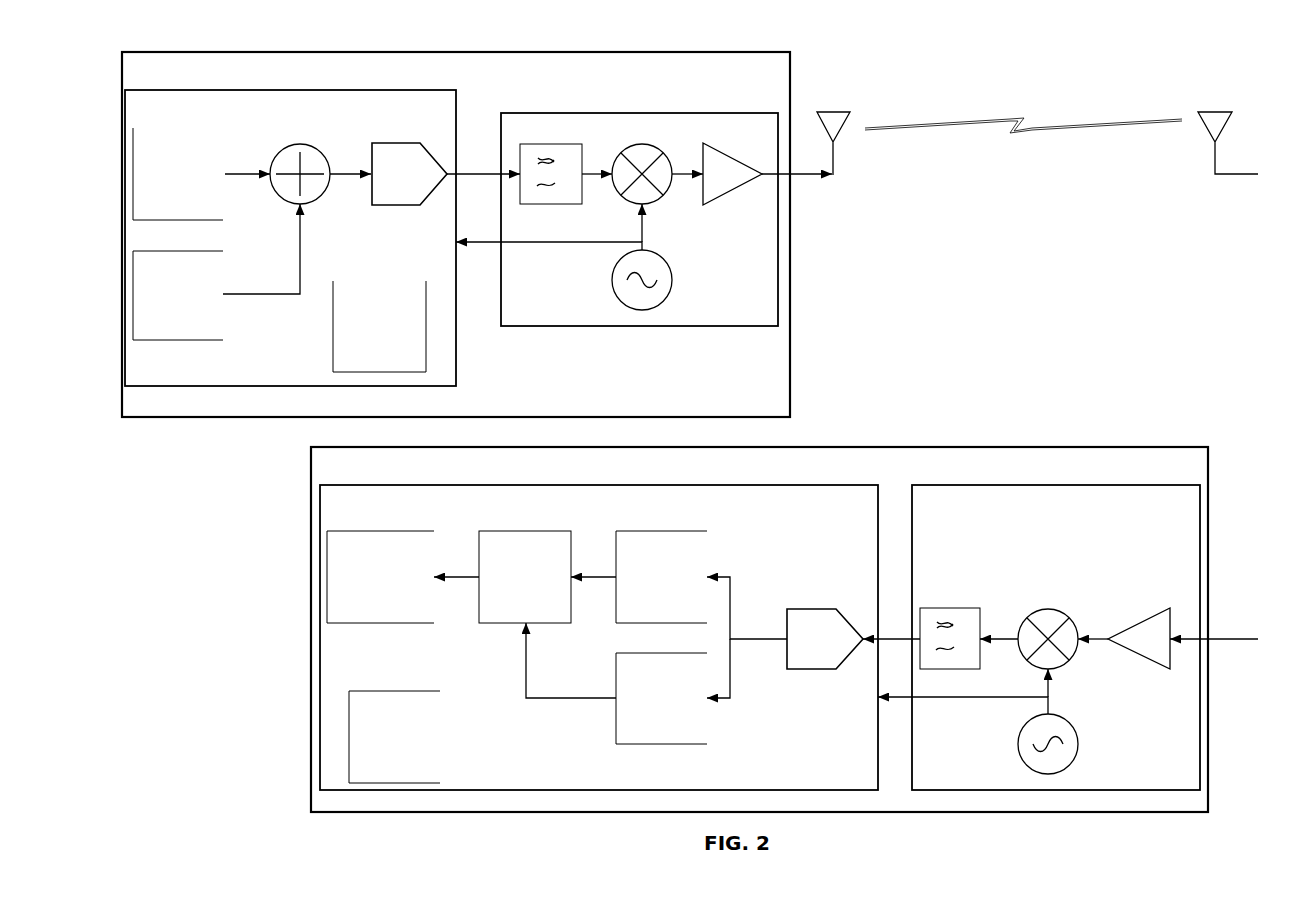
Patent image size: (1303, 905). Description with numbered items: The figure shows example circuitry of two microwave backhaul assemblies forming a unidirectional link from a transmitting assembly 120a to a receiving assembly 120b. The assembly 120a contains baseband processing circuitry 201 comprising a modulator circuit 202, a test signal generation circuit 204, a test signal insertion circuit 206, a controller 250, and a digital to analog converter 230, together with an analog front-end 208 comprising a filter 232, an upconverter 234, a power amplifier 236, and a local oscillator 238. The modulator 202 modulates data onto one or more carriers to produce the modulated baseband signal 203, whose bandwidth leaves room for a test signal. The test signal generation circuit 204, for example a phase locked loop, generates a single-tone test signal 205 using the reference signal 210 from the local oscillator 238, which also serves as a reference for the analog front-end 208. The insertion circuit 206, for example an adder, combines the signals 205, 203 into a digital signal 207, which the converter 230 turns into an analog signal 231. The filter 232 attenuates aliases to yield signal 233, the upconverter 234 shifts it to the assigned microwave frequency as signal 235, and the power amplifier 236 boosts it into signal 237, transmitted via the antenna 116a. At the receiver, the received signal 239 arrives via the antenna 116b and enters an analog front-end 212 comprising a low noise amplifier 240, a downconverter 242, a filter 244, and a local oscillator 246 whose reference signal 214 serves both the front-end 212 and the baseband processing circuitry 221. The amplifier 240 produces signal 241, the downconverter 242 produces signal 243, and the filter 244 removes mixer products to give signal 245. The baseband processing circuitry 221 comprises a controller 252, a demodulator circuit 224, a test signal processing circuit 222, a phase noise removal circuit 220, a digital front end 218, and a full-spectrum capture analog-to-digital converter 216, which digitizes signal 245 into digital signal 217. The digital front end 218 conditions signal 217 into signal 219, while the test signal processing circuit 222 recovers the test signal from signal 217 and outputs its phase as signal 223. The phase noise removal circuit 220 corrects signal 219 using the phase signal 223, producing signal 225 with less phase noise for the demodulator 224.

The assembly 120a is at (426, 52).
The baseband processing circuitry 201 is at (222, 90).
The modulator circuit 202 is at (177, 127).
The modulated baseband signal 203 is at (253, 176).
The test signal generation circuit 204 is at (178, 342).
The test signal 205 is at (254, 297).
The test signal insertion circuit 206 is at (298, 144).
The combined digital signal 207 is at (352, 172).
The analog front-end 208 is at (534, 113).
The reference signal 210 is at (546, 242).
The digital to analog converter 230 is at (400, 143).
The analog signal 231 is at (479, 172).
The filter 232 is at (550, 142).
The filtered signal 233 is at (601, 172).
The upconverter 234 is at (640, 143).
The upconverted signal 235 is at (691, 172).
The power amplifier 236 is at (732, 155).
The amplified signal 237 is at (806, 172).
The local oscillator 238 is at (612, 286).
The controller 250 is at (363, 280).
The antenna 116a is at (845, 112).
The antenna 116b is at (1227, 112).
The assembly 120b is at (874, 447).
The analog front-end 212 is at (971, 485).
The reference signal 214 is at (1001, 697).
The full-spectrum capture analog-to-digital converter circuit 216 is at (816, 608).
The digital signal 217 is at (768, 637).
The digital front end 218 is at (660, 531).
The conditioned signal 219 is at (602, 574).
The phase noise removal circuit 220 is at (517, 531).
The baseband processing circuitry 221 is at (725, 485).
The test signal processing circuit 222 is at (660, 652).
The phase signal 223 is at (583, 698).
The demodulator circuit 224 is at (387, 531).
The phase-corrected signal 225 is at (459, 574).
The received signal 239 is at (1237, 637).
The low noise amplifier 240 is at (1143, 619).
The amplified received signal 241 is at (1099, 637).
The downconverter 242 is at (1046, 608).
The downconverted signal 243 is at (1009, 637).
The filter 244 is at (948, 606).
The filtered analog signal 245 is at (901, 637).
The local oscillator 246 is at (1080, 744).
The controller 252 is at (378, 690).